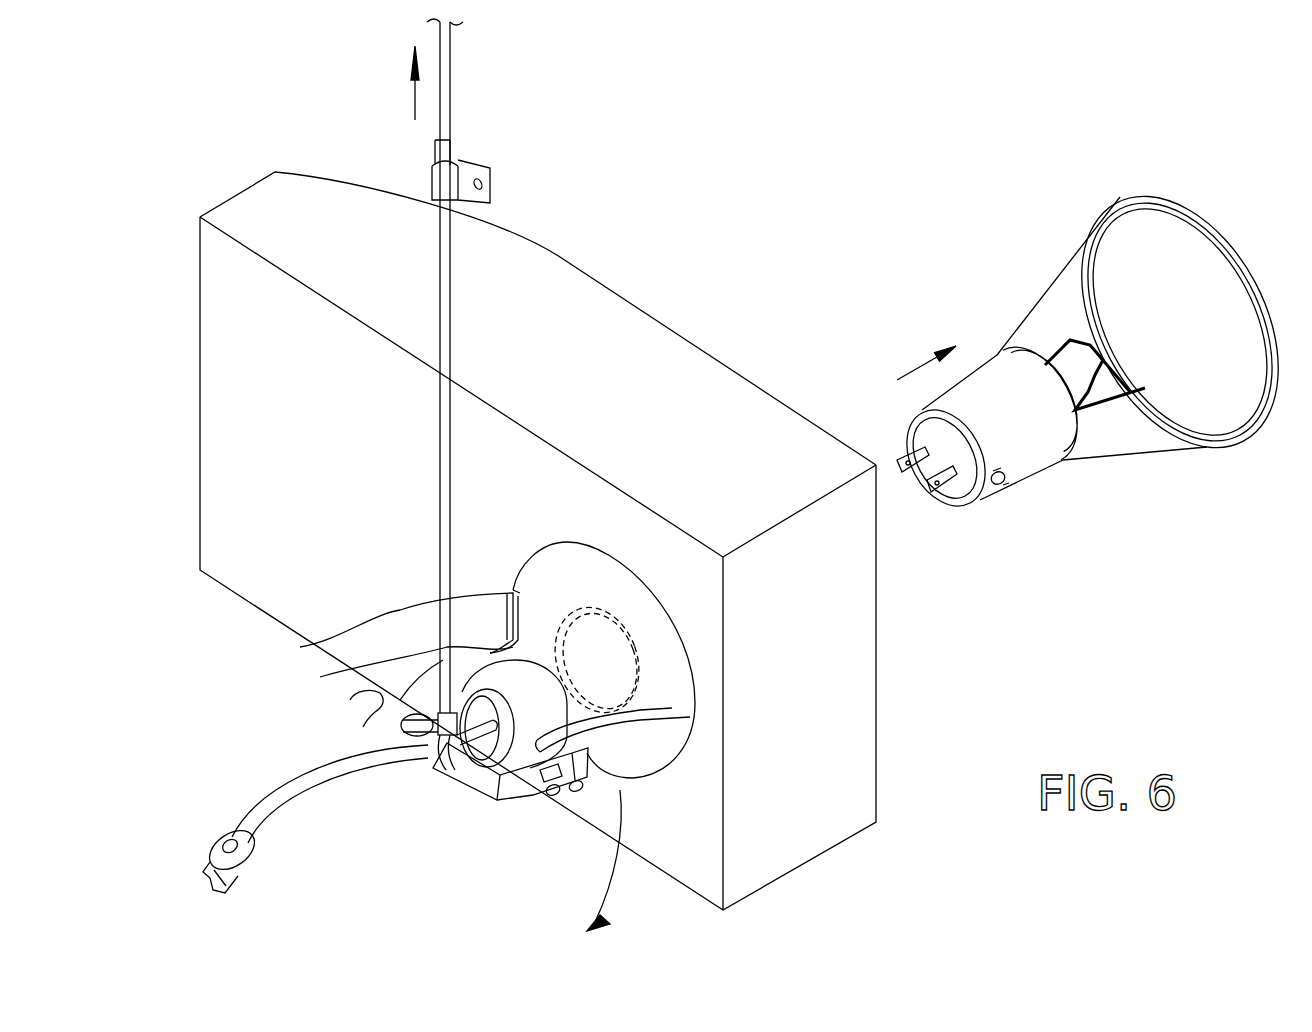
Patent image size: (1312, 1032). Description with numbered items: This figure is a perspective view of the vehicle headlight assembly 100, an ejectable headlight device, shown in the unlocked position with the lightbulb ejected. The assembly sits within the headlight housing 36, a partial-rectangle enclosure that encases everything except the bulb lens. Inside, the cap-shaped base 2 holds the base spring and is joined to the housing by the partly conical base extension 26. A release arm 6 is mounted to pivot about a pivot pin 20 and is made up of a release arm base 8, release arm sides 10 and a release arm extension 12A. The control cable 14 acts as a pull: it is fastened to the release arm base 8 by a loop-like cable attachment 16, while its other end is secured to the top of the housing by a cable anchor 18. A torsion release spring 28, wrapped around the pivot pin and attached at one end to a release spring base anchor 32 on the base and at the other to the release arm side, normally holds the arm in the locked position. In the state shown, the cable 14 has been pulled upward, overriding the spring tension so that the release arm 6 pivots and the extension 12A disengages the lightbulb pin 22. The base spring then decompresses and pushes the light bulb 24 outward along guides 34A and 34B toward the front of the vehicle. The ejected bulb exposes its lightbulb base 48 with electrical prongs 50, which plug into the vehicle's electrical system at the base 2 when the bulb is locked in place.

The vehicle headlight assembly 100 is at (757, 171).
The base 2 is at (353, 670).
The release arm 6 is at (350, 700).
The release arm base 8 is at (472, 776).
The release arm sides 10 is at (505, 792).
The release arm extension 12A is at (587, 770).
The control cable 14 is at (452, 80).
The cable attachment 16 is at (430, 758).
The cable anchor 18 is at (438, 183).
The pivot pin 20 is at (552, 786).
The lightbulb pin 22 is at (1014, 507).
The light bulb 24 is at (1101, 397).
The base extension 26 is at (672, 753).
The release spring 28 is at (568, 806).
The release spring base anchor 32 is at (580, 792).
The guide 34A is at (693, 713).
The guide 34B is at (300, 647).
The housing 36 is at (653, 347).
The lightbulb base 48 is at (1033, 437).
The electrical prongs 50 is at (903, 470).